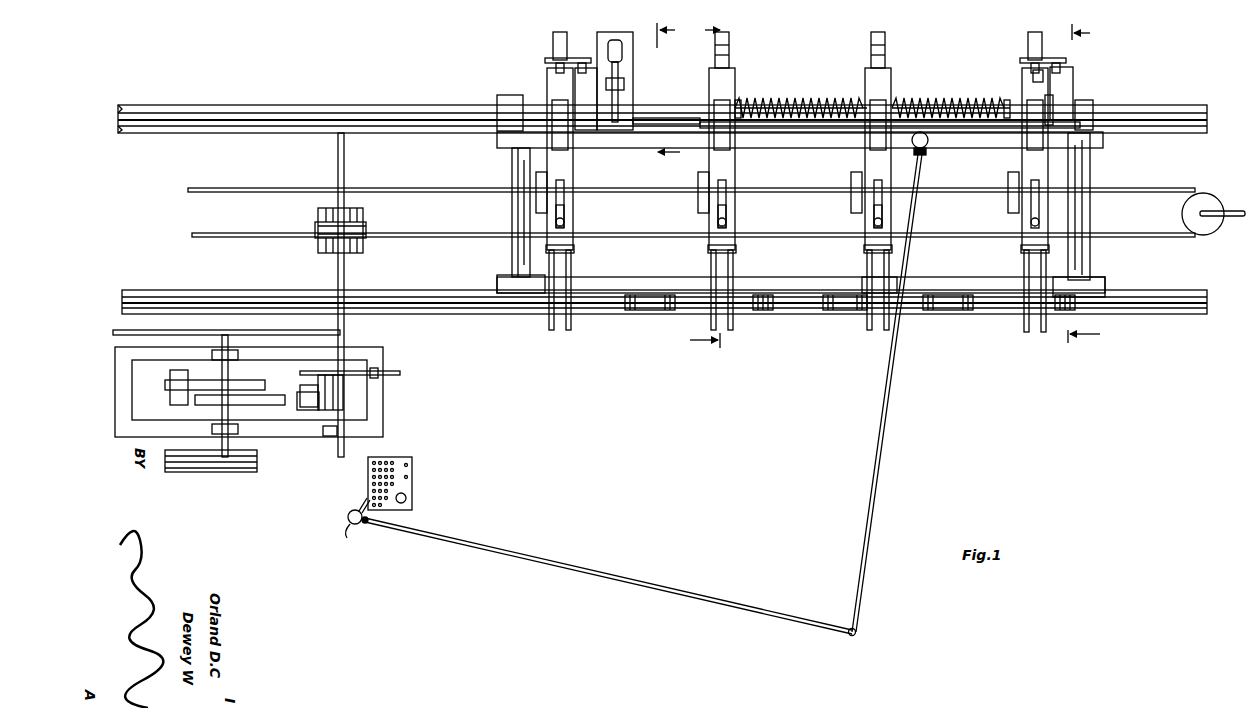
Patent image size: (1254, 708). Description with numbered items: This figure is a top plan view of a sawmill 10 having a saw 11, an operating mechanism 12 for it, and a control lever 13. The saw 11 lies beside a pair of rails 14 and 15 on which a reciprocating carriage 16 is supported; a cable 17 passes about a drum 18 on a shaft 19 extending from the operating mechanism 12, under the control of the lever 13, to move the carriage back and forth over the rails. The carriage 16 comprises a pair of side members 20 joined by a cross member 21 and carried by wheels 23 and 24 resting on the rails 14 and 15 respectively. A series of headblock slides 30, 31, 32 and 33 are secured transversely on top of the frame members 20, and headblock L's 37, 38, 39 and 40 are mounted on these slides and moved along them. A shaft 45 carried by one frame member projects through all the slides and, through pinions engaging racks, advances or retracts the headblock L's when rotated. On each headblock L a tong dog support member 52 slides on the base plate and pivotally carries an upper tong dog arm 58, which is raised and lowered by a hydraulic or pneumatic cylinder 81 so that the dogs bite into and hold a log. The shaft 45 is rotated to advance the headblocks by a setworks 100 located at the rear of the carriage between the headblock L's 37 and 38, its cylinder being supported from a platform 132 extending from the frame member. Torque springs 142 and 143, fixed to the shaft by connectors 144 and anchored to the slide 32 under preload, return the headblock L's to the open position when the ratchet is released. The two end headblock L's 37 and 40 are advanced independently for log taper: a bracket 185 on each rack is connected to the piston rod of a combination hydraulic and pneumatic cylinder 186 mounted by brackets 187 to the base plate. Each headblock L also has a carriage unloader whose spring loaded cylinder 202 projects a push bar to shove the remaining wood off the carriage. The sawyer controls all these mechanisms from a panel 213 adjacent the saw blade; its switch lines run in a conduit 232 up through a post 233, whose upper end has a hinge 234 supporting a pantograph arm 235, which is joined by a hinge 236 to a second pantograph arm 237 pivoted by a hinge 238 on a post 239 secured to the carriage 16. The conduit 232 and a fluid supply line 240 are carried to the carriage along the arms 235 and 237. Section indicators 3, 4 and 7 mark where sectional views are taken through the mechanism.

The sawmill 10 is at (295, 445).
The saw 11 is at (292, 332).
The operating mechanism 12 is at (362, 403).
The control lever 13 is at (394, 372).
The rail 14 is at (216, 290).
The rail 15 is at (232, 108).
The carriage 16 is at (676, 334).
The cable 17 is at (424, 194).
The drum 18 is at (318, 213).
The shaft 19 is at (344, 268).
The side members 20 is at (597, 150).
The cross member 21 is at (512, 236).
The wheels 23 is at (635, 312).
The wheels 24 is at (766, 130).
The headblock slide 30 is at (572, 265).
The headblock slide 31 is at (735, 272).
The headblock slide 32 is at (866, 268).
The headblock slide 33 is at (1026, 268).
The headblock L 37 is at (574, 211).
The headblock L 38 is at (736, 211).
The headblock L 39 is at (892, 214).
The headblock L 40 is at (1052, 220).
The shaft 45 is at (694, 108).
The tong dog support member 52 is at (735, 165).
The upper tong dog arm 58 is at (575, 190).
The cylinder 81 is at (565, 222).
The setworks 100 is at (633, 70).
The platform 132 is at (625, 84).
The torque spring 142 is at (941, 96).
The torque spring 143 is at (846, 96).
The connectors 144 is at (738, 98).
The bracket 185 is at (576, 58).
The combination hydraulic and pneumatic cylinder 186 is at (1073, 78).
The brackets 187 is at (1035, 72).
The cylinder 202 is at (536, 180).
The panel 213 is at (425, 440).
The conduit 232 is at (361, 508).
The post 233 is at (348, 517).
The hinge 234 is at (366, 524).
The pantograph arm 235 is at (543, 553).
The hinge 236 is at (857, 633).
The second pantograph arm 237 is at (888, 440).
The hinge 238 is at (924, 152).
The post 239 is at (929, 141).
The line 240 is at (350, 540).
The section line 3 is at (1085, 189).
The section line 4 is at (705, 191).
The section line 7 is at (668, 96).